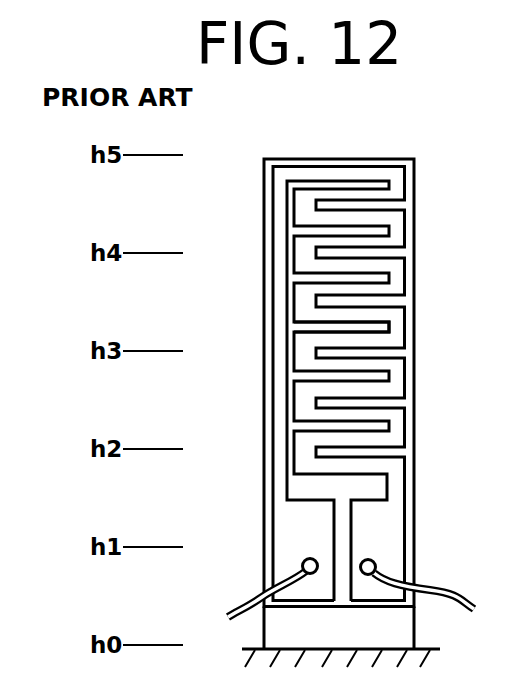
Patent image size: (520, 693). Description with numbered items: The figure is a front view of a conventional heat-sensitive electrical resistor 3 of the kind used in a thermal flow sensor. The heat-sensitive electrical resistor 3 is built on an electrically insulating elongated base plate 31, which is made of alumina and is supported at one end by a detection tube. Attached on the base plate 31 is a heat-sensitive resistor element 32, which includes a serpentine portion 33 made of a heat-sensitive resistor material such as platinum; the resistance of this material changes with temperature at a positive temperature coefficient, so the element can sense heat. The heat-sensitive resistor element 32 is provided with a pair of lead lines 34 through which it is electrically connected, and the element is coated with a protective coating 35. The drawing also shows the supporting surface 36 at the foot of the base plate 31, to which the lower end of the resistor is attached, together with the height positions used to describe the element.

The heat-sensitive electrical resistor 3 is at (459, 274).
The base plate 31 is at (318, 158).
The heat-sensitive resistor element 32 is at (427, 162).
The serpentine portion 33 is at (304, 336).
The lead lines 34 is at (248, 602).
The protective coating 35 is at (398, 613).
The mounting surface 36 is at (328, 650).